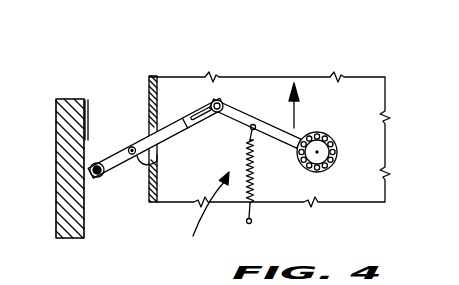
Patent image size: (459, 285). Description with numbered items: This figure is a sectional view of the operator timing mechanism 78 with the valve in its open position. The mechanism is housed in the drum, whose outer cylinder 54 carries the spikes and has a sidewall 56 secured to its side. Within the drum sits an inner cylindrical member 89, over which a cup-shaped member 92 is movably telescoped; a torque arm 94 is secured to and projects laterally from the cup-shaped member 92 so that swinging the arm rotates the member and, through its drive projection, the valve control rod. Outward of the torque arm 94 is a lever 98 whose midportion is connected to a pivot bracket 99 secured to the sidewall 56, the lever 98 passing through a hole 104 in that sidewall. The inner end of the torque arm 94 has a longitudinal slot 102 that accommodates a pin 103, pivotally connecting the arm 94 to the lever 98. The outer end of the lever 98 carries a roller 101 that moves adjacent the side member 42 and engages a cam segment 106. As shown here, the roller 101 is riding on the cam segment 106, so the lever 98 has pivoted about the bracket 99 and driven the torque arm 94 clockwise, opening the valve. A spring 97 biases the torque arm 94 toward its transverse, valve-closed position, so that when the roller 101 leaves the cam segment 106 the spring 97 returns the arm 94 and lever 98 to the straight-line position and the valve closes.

The side member 42 is at (58, 117).
The cam segment 106 is at (88, 139).
The sidewall 56 is at (153, 83).
The outer cylinder 54 is at (353, 192).
The lever 98 is at (116, 157).
The hole 104 is at (158, 154).
The longitudinal slot 102 is at (196, 104).
The torque arm 94 is at (280, 140).
The pivot bracket 99 is at (131, 146).
The roller 101 is at (100, 177).
The pin 103 is at (221, 101).
The cup-shaped member 92 is at (325, 136).
The inner cylindrical member 89 is at (338, 153).
The spring 97 is at (256, 187).
The operator timing mechanism 78 is at (198, 212).